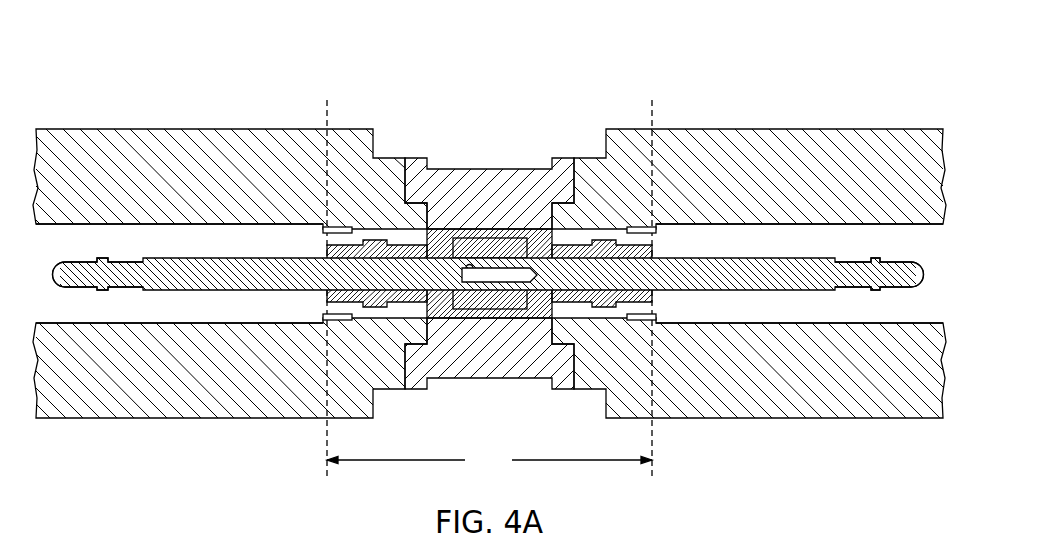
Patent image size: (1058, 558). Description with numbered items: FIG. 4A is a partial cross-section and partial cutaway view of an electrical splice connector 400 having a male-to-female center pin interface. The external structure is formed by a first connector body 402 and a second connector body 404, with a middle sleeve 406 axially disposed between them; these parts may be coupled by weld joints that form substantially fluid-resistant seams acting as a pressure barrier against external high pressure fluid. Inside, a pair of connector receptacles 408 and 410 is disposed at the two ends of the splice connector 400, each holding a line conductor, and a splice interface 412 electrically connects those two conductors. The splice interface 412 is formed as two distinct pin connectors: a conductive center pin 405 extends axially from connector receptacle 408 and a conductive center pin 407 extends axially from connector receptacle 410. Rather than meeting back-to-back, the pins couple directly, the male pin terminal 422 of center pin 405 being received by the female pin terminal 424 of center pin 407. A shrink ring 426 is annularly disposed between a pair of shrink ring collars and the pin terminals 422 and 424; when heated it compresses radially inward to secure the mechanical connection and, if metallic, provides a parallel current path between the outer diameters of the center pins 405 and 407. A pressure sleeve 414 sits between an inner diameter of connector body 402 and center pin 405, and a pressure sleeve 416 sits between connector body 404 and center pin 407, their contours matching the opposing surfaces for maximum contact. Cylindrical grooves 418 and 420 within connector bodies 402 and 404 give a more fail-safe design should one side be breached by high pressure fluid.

The splice connector 400 is at (489, 239).
The first connector body 402 is at (205, 143).
The second connector body 404 is at (776, 143).
The conductive center pin 405 is at (172, 289).
The middle sleeve 406 is at (487, 180).
The conductive center pin 407 is at (805, 289).
The connector receptacle 408 is at (240, 314).
The connector receptacle 410 is at (738, 314).
The splice interface 412 is at (489, 460).
The pressure sleeve 414 is at (403, 232).
The pressure sleeve 416 is at (602, 238).
The cylindrical groove 418 is at (343, 223).
The cylindrical groove 420 is at (635, 223).
The male pin terminal 422 is at (485, 273).
The female pin terminal 424 is at (568, 262).
The shrink ring 426 is at (508, 237).